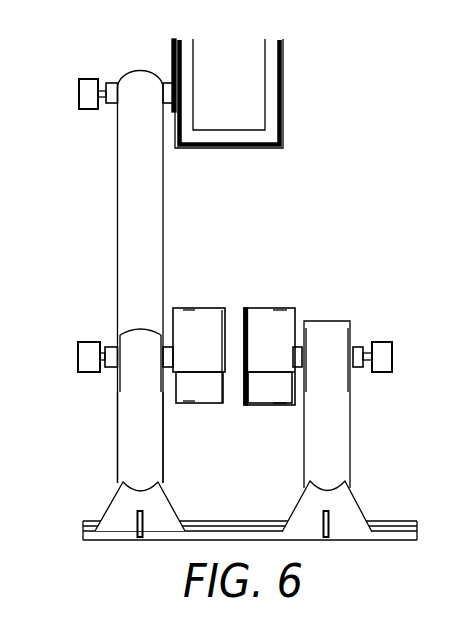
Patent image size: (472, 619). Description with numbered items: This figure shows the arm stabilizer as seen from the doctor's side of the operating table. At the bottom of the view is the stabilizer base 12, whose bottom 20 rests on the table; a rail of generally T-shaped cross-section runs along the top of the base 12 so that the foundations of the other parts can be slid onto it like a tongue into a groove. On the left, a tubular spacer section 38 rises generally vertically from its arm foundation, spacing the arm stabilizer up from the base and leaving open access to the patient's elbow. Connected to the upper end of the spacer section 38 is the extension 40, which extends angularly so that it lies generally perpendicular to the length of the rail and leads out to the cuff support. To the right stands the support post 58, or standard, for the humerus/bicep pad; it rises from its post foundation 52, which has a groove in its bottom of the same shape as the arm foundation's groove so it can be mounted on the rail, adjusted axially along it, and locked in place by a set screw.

The stabilizer base 12 is at (238, 522).
The bottom 20 is at (347, 540).
The spacer section 38 is at (127, 443).
The extension 40 is at (153, 213).
The post foundation 52 is at (347, 508).
The support post 58 is at (337, 433).